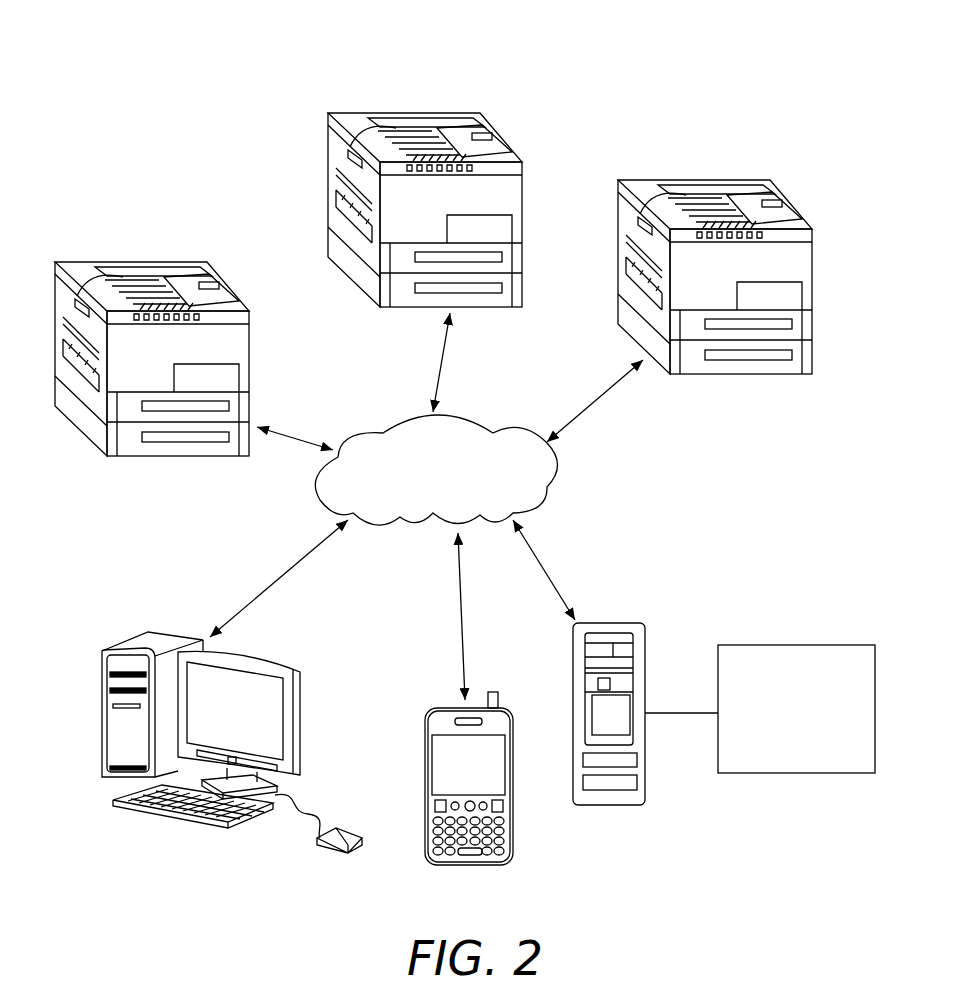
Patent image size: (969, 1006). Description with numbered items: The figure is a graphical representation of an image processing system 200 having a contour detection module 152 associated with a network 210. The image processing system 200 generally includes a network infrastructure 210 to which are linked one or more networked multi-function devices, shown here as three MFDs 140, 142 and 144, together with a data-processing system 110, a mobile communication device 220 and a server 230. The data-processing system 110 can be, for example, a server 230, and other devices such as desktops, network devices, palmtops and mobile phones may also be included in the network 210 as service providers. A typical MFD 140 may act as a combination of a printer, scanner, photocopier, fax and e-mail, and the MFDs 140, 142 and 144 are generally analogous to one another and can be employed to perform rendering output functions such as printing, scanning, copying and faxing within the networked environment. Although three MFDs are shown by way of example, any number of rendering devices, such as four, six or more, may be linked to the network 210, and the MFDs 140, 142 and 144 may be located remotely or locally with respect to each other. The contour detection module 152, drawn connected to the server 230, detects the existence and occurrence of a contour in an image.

The image processing system 200 is at (582, 67).
The multi-function device 140 is at (418, 113).
The multi-function device 142 is at (145, 262).
The multi-function device 144 is at (707, 180).
The network 210 is at (508, 430).
The data-processing system 110 is at (285, 662).
The mobile communication device 220 is at (513, 842).
The server 230 is at (607, 623).
The contour detection module 152 is at (787, 643).